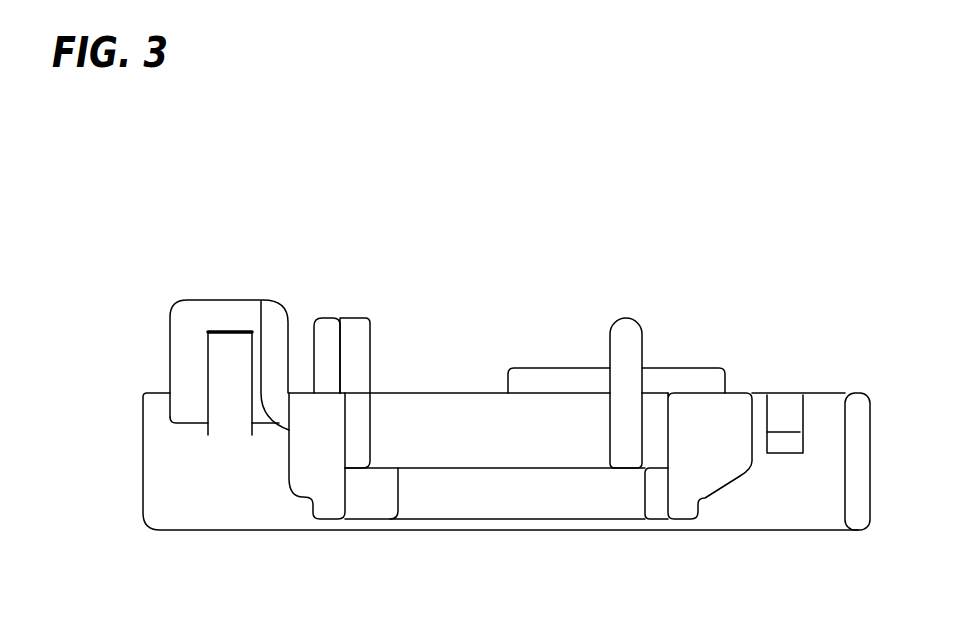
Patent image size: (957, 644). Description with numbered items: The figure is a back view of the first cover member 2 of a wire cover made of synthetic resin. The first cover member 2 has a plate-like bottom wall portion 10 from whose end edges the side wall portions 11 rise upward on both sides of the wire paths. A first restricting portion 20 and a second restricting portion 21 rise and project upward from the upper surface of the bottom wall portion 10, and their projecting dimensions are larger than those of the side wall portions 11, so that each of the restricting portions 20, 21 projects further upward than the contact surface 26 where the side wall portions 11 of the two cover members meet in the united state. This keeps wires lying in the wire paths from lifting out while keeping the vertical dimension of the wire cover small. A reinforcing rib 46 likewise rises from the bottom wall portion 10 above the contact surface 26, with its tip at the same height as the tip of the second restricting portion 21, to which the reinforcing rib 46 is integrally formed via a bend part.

The first cover member 2 is at (758, 258).
The bottom wall portion 10 is at (518, 503).
The side wall portion 11 is at (783, 518).
The first restricting portion 20 is at (628, 347).
The second restricting portion 21 is at (357, 355).
The contact surface 26 is at (471, 392).
The reinforcing rib 46 is at (325, 328).